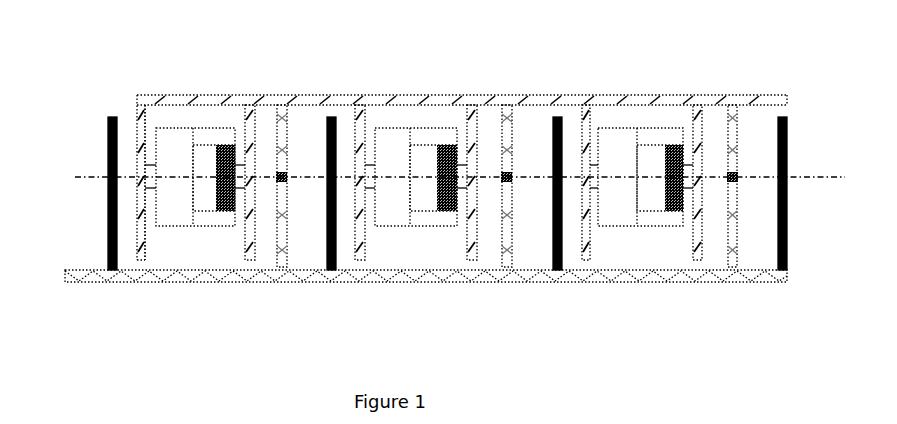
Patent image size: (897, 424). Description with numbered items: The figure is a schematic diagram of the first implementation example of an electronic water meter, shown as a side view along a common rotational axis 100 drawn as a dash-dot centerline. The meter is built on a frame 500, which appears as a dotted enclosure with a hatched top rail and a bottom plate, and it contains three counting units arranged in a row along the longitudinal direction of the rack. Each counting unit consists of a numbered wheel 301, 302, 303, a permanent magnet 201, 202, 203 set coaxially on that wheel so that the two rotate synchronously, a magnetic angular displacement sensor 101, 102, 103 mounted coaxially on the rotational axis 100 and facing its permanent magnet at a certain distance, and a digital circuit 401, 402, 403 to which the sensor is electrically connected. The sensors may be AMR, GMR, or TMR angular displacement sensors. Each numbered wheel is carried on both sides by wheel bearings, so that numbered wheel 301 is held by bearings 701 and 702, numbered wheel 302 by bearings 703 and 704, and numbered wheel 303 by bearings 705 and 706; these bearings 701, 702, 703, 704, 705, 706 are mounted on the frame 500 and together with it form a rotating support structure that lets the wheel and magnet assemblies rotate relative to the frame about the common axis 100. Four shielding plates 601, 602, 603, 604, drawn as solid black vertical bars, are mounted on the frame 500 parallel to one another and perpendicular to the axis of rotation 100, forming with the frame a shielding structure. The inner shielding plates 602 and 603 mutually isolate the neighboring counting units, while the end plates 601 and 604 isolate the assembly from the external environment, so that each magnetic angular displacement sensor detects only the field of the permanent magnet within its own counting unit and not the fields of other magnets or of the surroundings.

The rotational axis 100 is at (429, 199).
The magnetic angular displacement sensor 101 is at (256, 247).
The magnetic angular displacement sensor 102 is at (478, 247).
The magnetic angular displacement sensor 103 is at (703, 247).
The permanent magnet 201 is at (226, 150).
The permanent magnet 202 is at (448, 150).
The permanent magnet 203 is at (674, 150).
The numbered wheel 301 is at (185, 225).
The numbered wheel 302 is at (403, 225).
The numbered wheel 303 is at (628, 225).
The digital circuit 401 is at (287, 122).
The digital circuit 402 is at (513, 122).
The digital circuit 403 is at (739, 122).
The frame 500 is at (144, 95).
The shielding plate 601 is at (108, 152).
The shielding plate 602 is at (337, 122).
The shielding plate 603 is at (560, 122).
The shielding plate 604 is at (787, 145).
The wheel bearing 701 is at (93, 182).
The wheel bearing 702 is at (206, 227).
The wheel bearing 703 is at (332, 228).
The wheel bearing 704 is at (427, 228).
The wheel bearing 705 is at (554, 228).
The wheel bearing 706 is at (651, 228).